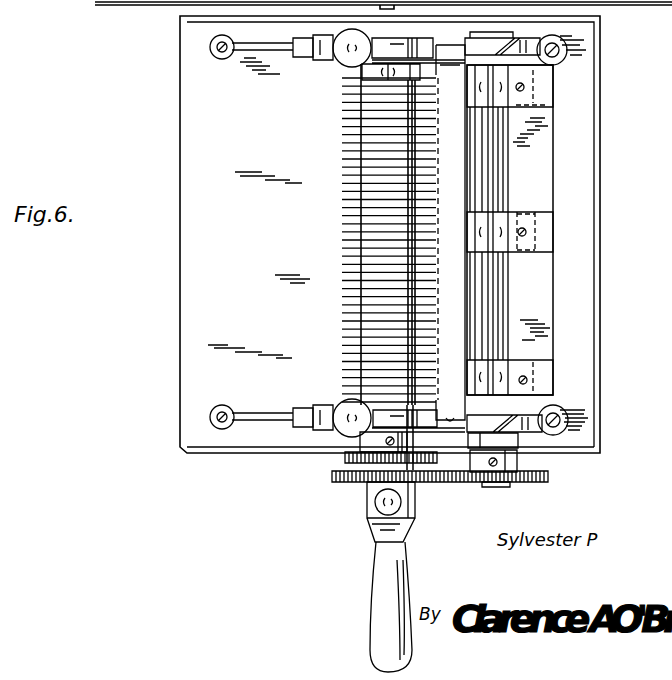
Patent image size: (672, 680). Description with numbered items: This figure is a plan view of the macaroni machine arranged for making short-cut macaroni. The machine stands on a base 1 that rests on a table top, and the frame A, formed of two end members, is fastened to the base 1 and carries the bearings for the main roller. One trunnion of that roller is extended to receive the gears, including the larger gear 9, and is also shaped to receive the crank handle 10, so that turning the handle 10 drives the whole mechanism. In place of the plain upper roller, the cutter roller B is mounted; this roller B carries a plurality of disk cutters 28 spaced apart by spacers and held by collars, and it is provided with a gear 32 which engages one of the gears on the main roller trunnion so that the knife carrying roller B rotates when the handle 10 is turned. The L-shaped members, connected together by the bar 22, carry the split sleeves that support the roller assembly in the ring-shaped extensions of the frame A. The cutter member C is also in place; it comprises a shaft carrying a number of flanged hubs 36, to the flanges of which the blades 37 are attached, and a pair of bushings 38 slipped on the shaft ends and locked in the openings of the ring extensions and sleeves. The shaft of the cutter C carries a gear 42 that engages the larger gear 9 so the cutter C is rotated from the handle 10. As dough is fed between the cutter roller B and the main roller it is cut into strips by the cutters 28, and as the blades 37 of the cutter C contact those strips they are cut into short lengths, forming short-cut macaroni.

The base 1 is at (190, 425).
The larger gear 9 is at (437, 480).
The crank handle 10 is at (402, 566).
The bar 22 is at (450, 233).
The disk cutter 28 is at (338, 199).
The gear 32 is at (345, 456).
The flanged hub 36 is at (500, 98).
The blade 37 is at (545, 166).
The bushing 38 is at (523, 438).
The gear 42 is at (548, 478).
The frame A is at (272, 55).
The cutter roller B is at (365, 234).
The cutter member C is at (561, 218).